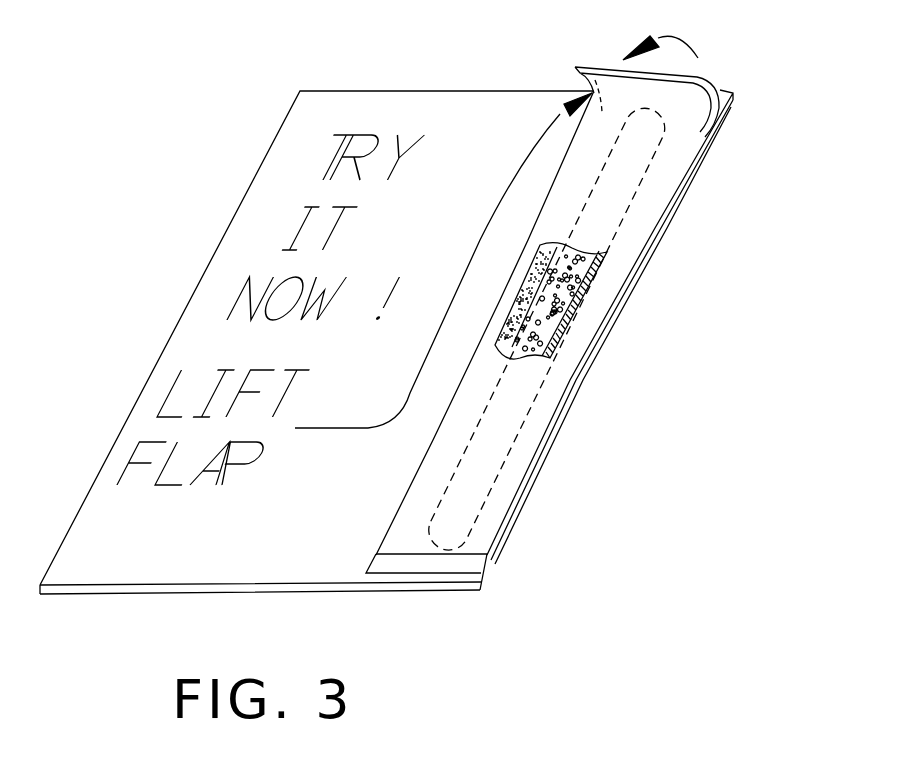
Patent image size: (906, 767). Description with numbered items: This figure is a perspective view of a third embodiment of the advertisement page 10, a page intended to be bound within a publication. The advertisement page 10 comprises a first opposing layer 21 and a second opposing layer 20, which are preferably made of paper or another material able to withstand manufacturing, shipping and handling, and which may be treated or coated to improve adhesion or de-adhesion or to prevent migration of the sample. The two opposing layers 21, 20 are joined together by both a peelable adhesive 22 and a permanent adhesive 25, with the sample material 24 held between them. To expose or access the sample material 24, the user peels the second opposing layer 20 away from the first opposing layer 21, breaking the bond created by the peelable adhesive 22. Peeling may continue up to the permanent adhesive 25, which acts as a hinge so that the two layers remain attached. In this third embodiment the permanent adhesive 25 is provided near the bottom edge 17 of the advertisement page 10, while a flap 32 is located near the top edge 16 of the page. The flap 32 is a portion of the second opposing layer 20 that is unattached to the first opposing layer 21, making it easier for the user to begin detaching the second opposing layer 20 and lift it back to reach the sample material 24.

The advertisement page 10 is at (195, 143).
The top edge 16 is at (368, 52).
The bottom edge 17 is at (170, 587).
The first opposing layer 21 is at (473, 113).
The second opposing layer 20 is at (683, 148).
The peelable adhesive 22 is at (497, 345).
The sample material 24 is at (557, 292).
The permanent adhesive 25 is at (472, 563).
The flap 32 is at (602, 80).